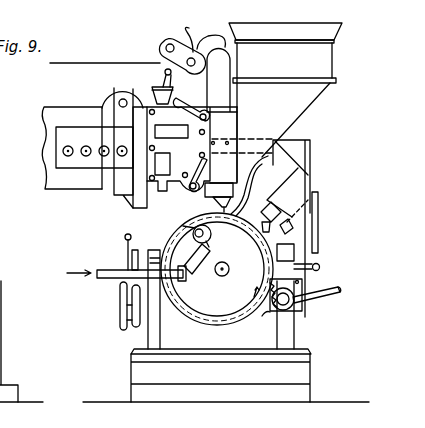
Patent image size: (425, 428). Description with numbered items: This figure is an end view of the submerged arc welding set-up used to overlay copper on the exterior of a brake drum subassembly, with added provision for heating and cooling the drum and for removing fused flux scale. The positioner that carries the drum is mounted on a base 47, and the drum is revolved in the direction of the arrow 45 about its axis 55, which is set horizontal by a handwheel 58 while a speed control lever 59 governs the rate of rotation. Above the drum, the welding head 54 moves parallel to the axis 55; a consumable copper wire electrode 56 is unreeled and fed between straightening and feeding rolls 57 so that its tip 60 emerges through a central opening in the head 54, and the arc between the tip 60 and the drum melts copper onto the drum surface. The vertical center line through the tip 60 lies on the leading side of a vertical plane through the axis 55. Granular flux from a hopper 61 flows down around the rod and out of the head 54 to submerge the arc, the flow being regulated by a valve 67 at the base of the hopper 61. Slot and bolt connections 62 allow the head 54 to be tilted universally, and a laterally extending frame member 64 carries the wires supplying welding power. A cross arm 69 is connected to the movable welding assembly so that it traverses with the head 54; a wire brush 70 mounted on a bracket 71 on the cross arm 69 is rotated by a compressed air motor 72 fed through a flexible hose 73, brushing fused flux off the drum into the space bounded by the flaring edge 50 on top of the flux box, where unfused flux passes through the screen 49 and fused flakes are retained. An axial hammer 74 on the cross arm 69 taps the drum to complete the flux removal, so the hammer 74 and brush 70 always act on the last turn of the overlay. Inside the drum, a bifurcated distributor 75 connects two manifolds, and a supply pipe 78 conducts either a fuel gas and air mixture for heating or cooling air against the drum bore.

The arrow 45 is at (237, 308).
The base 47 is at (3, 386).
The screen 49 is at (298, 364).
The upwardly and outwardly flaring edge 50 is at (310, 354).
The welding head 54 is at (222, 192).
The axis 55 is at (60, 134).
The consumable copper wire electrode 56 is at (211, 40).
The straightening and feeding rolls 57 is at (193, 37).
The handwheel 58 is at (122, 327).
The speed control lever 59 is at (125, 236).
The tip 60 is at (233, 209).
The hopper 61 is at (303, 99).
The slot and bolt connections 62 is at (210, 97).
The laterally extending frame member 64 is at (54, 110).
The valve 67 is at (284, 160).
The cross arm 69 is at (306, 138).
The wire brush 70 is at (263, 316).
The bracket 71 is at (287, 316).
The compressed air motor 72 is at (292, 306).
The flexible hose 73 is at (323, 288).
The axial hammer 74 is at (287, 191).
The bifurcated distributor 75 is at (182, 231).
The supply pipe 78 is at (112, 277).